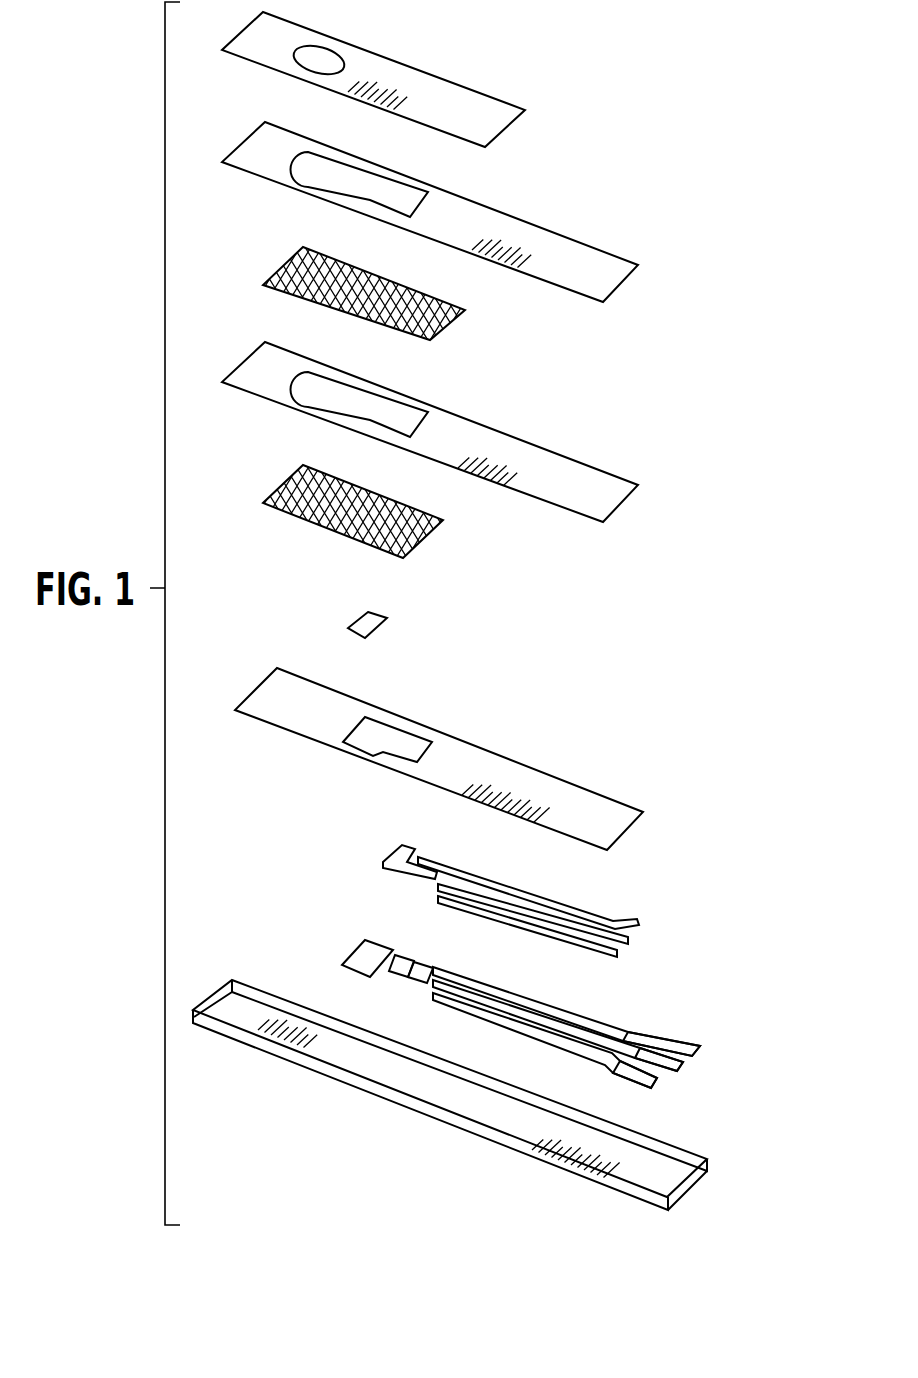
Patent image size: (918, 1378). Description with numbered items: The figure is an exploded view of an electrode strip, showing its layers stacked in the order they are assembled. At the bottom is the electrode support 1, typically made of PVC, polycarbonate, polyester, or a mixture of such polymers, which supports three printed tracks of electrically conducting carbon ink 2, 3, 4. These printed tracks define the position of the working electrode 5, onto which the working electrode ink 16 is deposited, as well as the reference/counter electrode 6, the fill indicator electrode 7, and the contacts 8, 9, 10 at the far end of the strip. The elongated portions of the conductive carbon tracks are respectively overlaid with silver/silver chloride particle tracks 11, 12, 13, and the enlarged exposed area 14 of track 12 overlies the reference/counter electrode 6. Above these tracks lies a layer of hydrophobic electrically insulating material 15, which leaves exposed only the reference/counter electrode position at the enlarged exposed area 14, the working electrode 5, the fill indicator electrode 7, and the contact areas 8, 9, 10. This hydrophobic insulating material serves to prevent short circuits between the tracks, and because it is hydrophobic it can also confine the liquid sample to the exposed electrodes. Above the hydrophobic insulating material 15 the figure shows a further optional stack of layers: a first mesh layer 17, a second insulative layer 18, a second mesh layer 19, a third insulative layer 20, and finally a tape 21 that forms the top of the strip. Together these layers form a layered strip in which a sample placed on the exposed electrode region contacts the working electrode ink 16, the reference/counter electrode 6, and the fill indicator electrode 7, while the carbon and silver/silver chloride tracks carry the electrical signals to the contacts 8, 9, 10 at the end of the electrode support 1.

The electrode support 1 is at (693, 1178).
The printed track of electrically conducting carbon ink 2 is at (507, 992).
The printed track of electrically conducting carbon ink 3 is at (543, 1007).
The printed track of electrically conducting carbon ink 4 is at (543, 1037).
The working electrode 5 is at (362, 960).
The reference/counter electrode 6 is at (403, 958).
The fill indicator electrode 7 is at (420, 970).
The contact 8 is at (668, 1040).
The contact 9 is at (677, 1073).
The contact 10 is at (647, 1090).
The silver/silver chloride particle track 11 is at (492, 878).
The silver/silver chloride particle track 12 is at (533, 905).
The silver/silver chloride particle track 13 is at (588, 917).
The enlarged exposed area 14 is at (388, 852).
The layer of hydrophobic electrically insulating material 15 is at (570, 798).
The working electrode ink 16 is at (380, 630).
The first mesh layer 17 is at (415, 503).
The second insulative layer 18 is at (590, 477).
The second mesh layer 19 is at (427, 292).
The third insulative layer 20 is at (560, 250).
The tape 21 is at (475, 108).